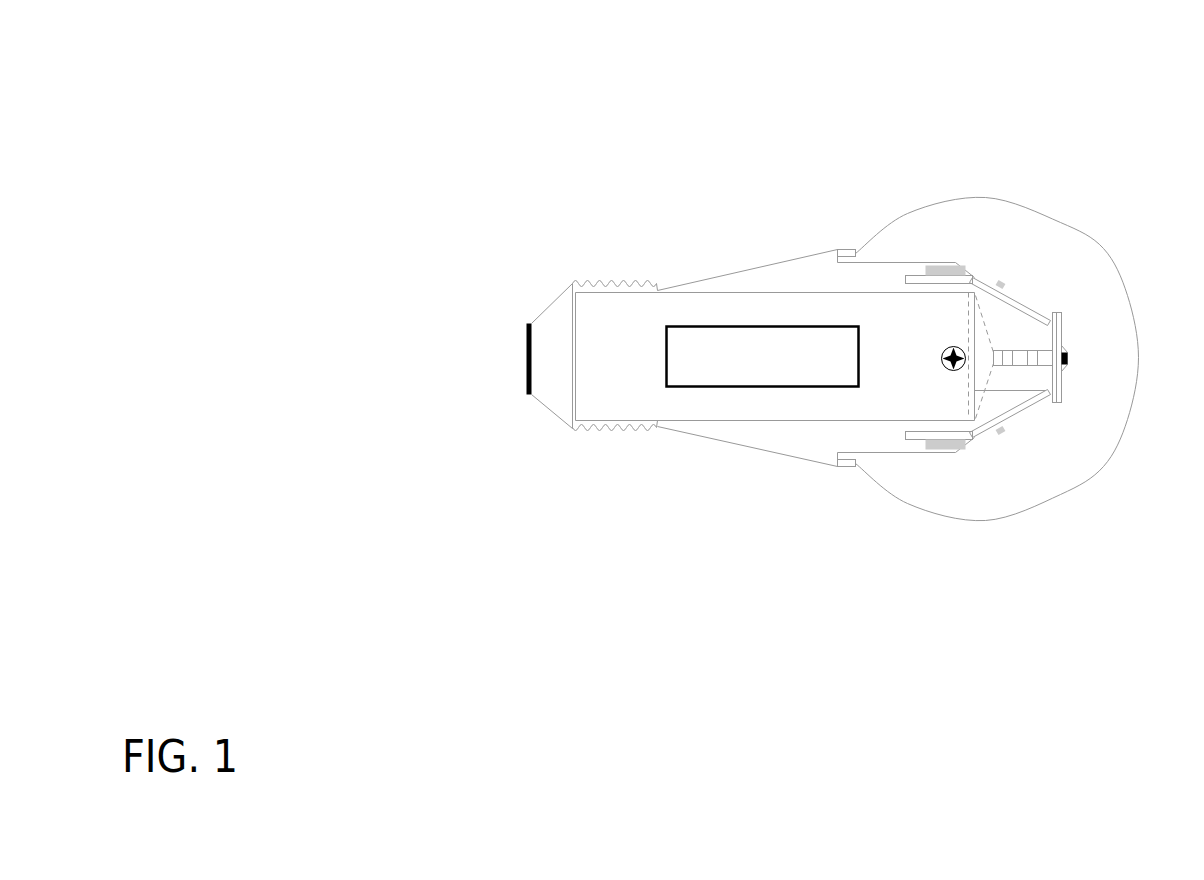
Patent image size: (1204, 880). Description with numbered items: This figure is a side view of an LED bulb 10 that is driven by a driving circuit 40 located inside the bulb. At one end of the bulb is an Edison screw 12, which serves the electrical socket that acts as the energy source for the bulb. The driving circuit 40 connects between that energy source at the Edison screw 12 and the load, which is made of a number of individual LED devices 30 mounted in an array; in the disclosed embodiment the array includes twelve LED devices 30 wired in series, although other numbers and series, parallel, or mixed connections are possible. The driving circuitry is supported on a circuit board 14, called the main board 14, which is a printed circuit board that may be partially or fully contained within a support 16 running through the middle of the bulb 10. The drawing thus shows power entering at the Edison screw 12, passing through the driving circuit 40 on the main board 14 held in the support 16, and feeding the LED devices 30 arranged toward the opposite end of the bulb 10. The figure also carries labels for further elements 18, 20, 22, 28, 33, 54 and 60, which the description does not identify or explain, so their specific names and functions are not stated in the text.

The LED bulb 10 is at (385, 23).
The Edison screw 12 is at (606, 428).
The main board 14 is at (645, 397).
The support 16 is at (752, 420).
The heat sink lip 18 is at (802, 440).
The glass globe 20 is at (936, 223).
The LED mounting plate 22 is at (1055, 312).
The support post 28 is at (1053, 403).
The LED devices 30 is at (1006, 288).
The center LED 33 is at (1068, 358).
The driving circuit 40 is at (858, 356).
The base contact 54 is at (525, 340).
The LED strip 60 is at (1042, 308).